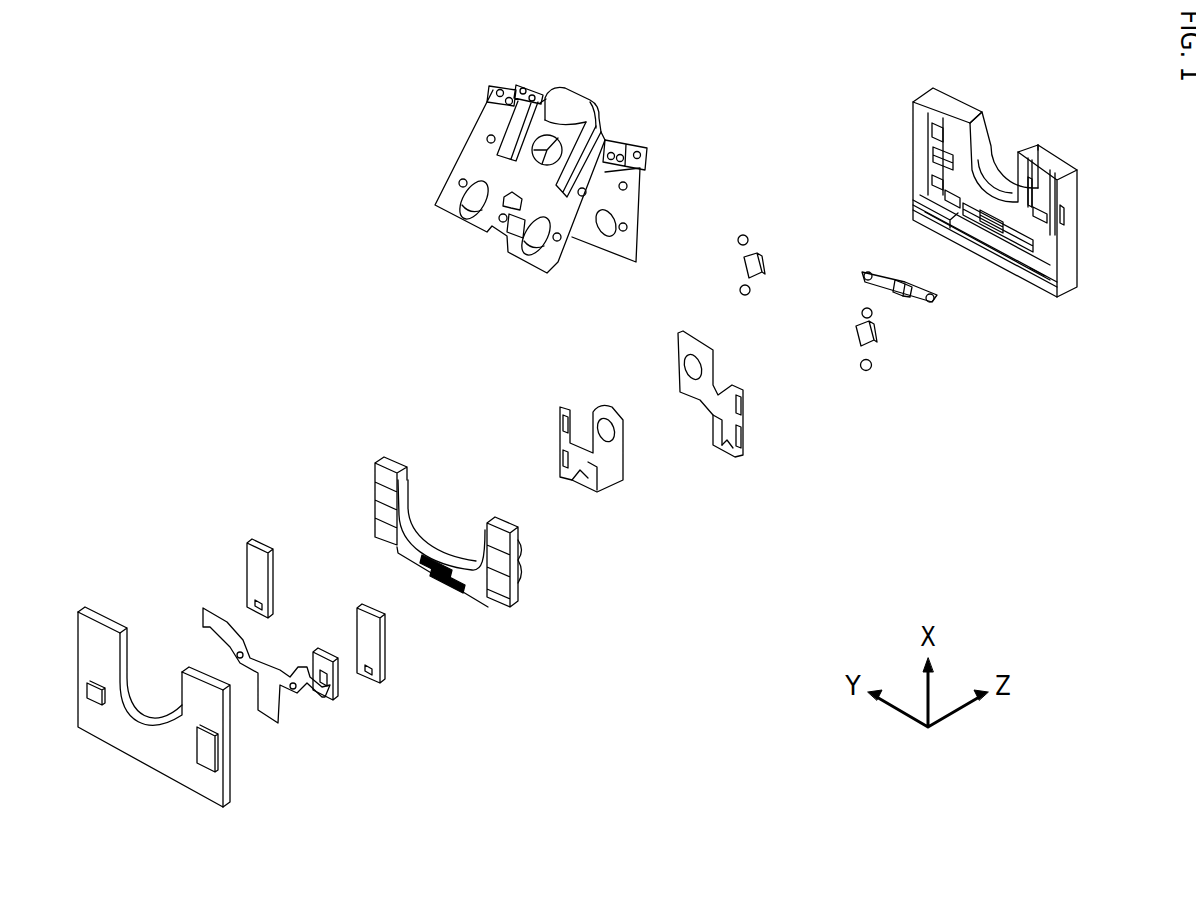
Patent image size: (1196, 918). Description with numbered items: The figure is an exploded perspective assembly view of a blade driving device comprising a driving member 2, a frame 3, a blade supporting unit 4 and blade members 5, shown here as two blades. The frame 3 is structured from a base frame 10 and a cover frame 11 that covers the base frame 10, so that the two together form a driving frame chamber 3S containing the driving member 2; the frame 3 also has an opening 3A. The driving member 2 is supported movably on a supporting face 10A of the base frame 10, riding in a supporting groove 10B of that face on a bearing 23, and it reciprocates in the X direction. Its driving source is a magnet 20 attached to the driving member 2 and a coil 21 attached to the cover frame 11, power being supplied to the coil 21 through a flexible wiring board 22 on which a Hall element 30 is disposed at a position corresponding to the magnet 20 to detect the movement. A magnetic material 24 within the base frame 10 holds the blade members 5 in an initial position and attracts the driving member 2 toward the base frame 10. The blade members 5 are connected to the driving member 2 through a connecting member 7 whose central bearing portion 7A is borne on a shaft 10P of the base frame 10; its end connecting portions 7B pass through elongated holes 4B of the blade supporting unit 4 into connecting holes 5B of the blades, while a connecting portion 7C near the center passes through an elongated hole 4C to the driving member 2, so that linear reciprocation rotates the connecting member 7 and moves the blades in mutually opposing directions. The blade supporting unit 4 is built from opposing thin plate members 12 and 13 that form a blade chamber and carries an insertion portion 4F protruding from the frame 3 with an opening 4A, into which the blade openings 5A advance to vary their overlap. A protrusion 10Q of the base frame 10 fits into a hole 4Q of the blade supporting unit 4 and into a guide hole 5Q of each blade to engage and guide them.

The driving member 2 is at (414, 515).
The frame 3 is at (612, 461).
The circular opening 3A is at (985, 178).
The driving frame chamber 3S is at (1037, 278).
The blade supporting unit 4 is at (546, 178).
The opening 4A is at (548, 135).
The elongated hole 4B is at (458, 217).
The elongated hole 4C is at (508, 237).
The insertion portion 4F is at (607, 142).
The hole 4Q is at (487, 138).
The blade member 5 is at (648, 417).
The opening 5A is at (605, 418).
The connecting hole 5B is at (580, 480).
The guide hole 5Q is at (560, 415).
The connecting member 7 is at (897, 307).
The bearing portion 7A is at (898, 296).
The connecting portion 7B is at (864, 273).
The connecting portion 7C is at (910, 298).
The base frame 10 is at (642, 385).
The supporting face 10A is at (1042, 178).
The supporting groove 10B is at (930, 128).
The shaft 10P is at (995, 262).
The protrusion 10Q is at (935, 157).
The cover frame 11 is at (170, 788).
The thin plate member 12 is at (636, 205).
The thin plate member 13 is at (598, 238).
The magnet 20 is at (376, 512).
The coil 21 is at (275, 580).
The wiring board 22 is at (285, 715).
The bearing 23 is at (740, 235).
The magnetic material 24 is at (760, 256).
The Hall element 30 is at (335, 680).